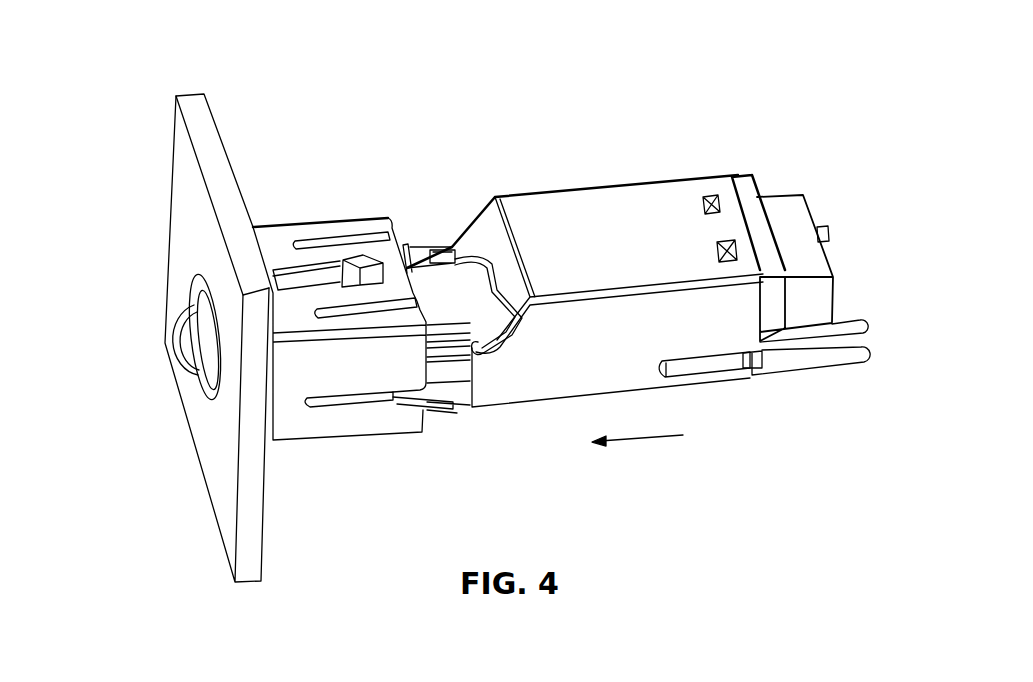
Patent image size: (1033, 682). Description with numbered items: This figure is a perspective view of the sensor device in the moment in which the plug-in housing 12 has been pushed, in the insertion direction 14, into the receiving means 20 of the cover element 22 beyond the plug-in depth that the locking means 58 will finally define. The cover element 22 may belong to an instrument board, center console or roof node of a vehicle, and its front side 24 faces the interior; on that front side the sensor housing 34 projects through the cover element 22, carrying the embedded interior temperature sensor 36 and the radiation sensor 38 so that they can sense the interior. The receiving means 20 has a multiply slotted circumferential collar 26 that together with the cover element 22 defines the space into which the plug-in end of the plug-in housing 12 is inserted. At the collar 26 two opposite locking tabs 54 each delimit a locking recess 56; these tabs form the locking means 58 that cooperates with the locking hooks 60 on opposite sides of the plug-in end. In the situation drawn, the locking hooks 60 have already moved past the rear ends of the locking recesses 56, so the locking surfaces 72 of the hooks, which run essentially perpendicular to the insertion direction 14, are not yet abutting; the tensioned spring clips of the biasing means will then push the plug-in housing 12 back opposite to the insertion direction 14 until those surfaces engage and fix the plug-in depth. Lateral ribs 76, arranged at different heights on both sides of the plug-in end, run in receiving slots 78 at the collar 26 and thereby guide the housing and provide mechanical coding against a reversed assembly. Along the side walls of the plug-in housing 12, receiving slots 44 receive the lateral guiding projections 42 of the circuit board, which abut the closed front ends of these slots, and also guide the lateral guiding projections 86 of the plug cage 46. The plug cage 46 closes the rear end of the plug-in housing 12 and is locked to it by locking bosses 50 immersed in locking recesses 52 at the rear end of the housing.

The plug-in housing 12 is at (657, 203).
The insertion direction 14 is at (640, 443).
The receiving means 20 is at (254, 131).
The cover element 22 is at (195, 110).
The front side 24 is at (222, 452).
The collar 26 is at (357, 423).
The sensor housing 34 is at (187, 338).
The interior temperature sensor 36 is at (190, 358).
The radiation sensor 38 is at (187, 317).
The guiding projections 42 is at (718, 367).
The receiving slots 44 is at (750, 368).
The plug cage 46 is at (806, 208).
The locking bosses 50 is at (705, 197).
The locking recesses 52 is at (728, 242).
The locking tabs 54 is at (433, 250).
The locking recess 56 is at (285, 265).
The locking means 58 is at (352, 134).
The locking hooks 60 is at (355, 262).
The locking surfaces 72 is at (400, 244).
The lateral ribs 76 is at (378, 400).
The receiving slots 78 is at (307, 405).
The guiding projections 86 is at (805, 363).